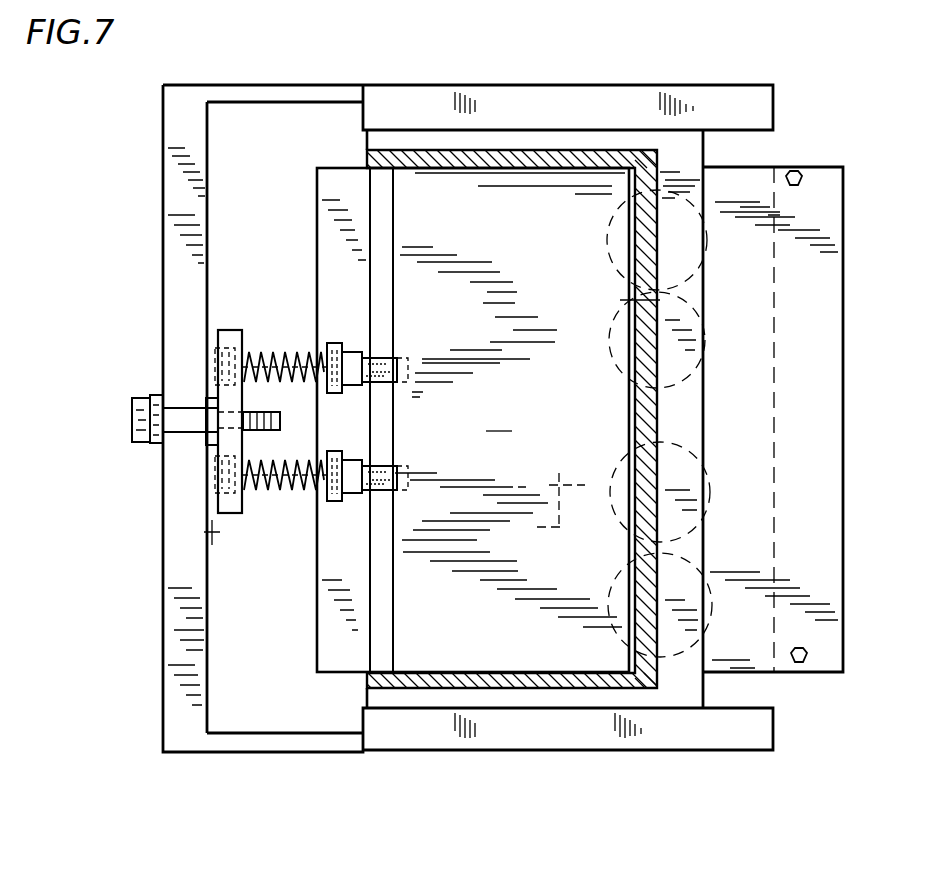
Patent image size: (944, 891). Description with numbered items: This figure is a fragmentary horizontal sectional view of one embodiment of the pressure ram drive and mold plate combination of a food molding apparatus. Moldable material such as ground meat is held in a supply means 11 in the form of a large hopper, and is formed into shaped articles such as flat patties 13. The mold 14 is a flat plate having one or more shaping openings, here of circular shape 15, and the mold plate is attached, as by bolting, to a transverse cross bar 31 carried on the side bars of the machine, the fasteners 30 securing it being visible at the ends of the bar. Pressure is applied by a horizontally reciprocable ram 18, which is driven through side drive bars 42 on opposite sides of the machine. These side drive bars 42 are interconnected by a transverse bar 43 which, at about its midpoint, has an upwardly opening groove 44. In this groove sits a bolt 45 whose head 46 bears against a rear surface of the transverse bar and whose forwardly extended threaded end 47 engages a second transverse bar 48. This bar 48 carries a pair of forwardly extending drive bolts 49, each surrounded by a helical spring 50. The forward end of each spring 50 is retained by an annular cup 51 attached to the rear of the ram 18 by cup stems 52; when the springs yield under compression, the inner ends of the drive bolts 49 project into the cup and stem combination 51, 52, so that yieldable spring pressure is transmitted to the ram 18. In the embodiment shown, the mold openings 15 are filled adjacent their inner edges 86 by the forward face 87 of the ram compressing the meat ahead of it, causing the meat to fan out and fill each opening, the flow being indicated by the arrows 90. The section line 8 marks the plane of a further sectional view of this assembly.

The section line 8- 8 is at (97, 421).
The supply means 11 is at (417, 168).
The flat patties 13 is at (706, 335).
The movable mold 14 is at (733, 176).
The circular shape opening 15 is at (702, 452).
The ram 18 is at (510, 400).
The nut 30 is at (797, 172).
The transverse cross bar 31 is at (833, 268).
The side drive bar 42 is at (247, 90).
The transverse bar 43 is at (163, 595).
The upwardly opening groove 44 is at (196, 430).
The bolt 45 is at (174, 408).
The head 46 is at (150, 446).
The threaded end 47 is at (265, 430).
The transverse bar 48 is at (232, 330).
The drive bolts 49 is at (283, 352).
The helical spring 50 is at (300, 350).
The cup 51 is at (336, 343).
The cup stems 52 is at (372, 355).
The inner edges 86 is at (626, 212).
The forward face 87 is at (648, 300).
The arrows 90 is at (630, 556).